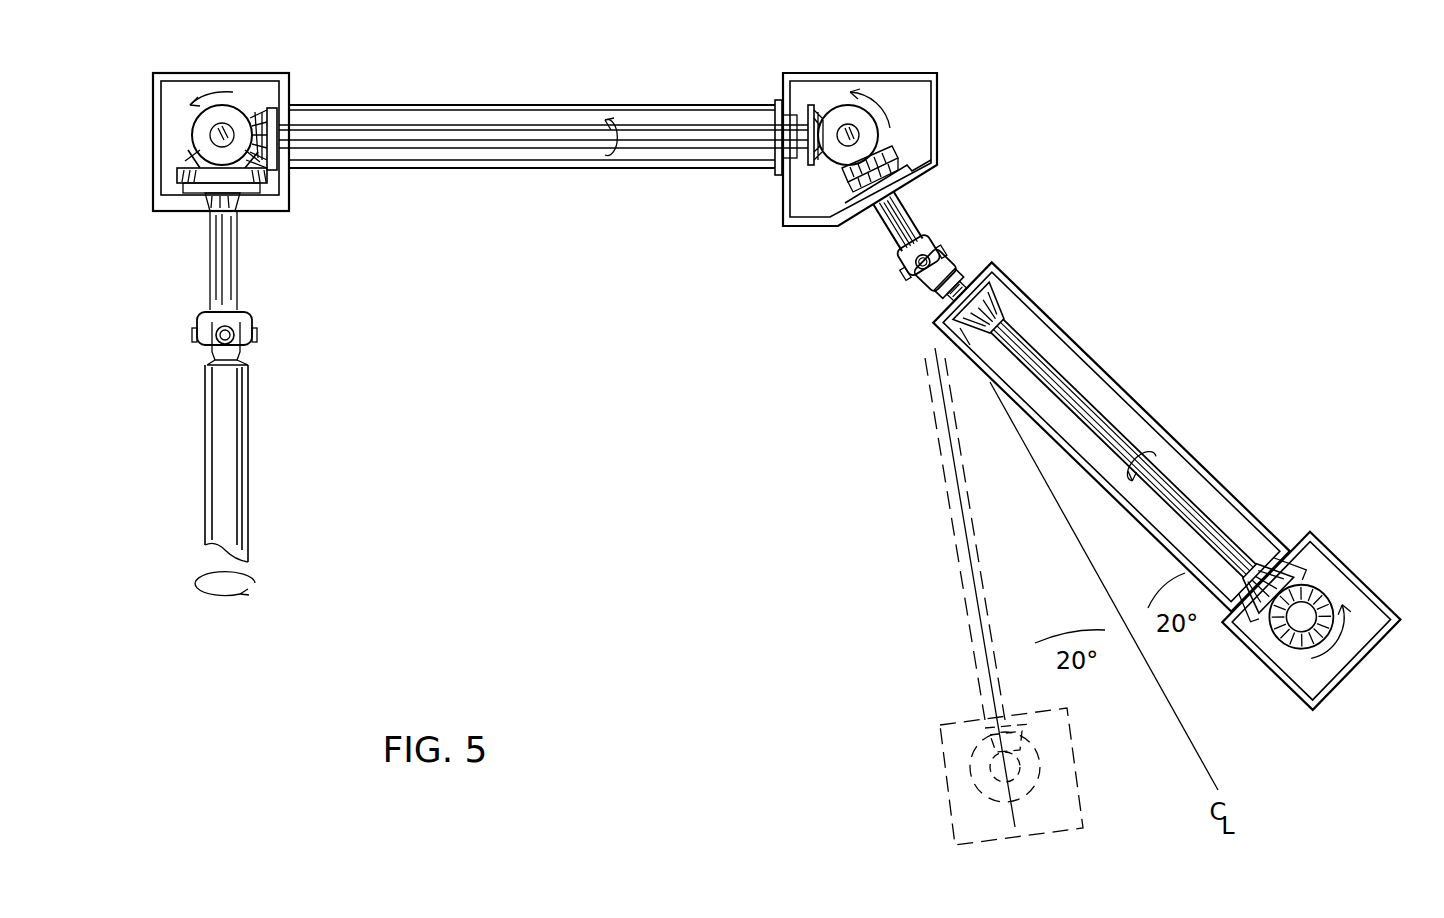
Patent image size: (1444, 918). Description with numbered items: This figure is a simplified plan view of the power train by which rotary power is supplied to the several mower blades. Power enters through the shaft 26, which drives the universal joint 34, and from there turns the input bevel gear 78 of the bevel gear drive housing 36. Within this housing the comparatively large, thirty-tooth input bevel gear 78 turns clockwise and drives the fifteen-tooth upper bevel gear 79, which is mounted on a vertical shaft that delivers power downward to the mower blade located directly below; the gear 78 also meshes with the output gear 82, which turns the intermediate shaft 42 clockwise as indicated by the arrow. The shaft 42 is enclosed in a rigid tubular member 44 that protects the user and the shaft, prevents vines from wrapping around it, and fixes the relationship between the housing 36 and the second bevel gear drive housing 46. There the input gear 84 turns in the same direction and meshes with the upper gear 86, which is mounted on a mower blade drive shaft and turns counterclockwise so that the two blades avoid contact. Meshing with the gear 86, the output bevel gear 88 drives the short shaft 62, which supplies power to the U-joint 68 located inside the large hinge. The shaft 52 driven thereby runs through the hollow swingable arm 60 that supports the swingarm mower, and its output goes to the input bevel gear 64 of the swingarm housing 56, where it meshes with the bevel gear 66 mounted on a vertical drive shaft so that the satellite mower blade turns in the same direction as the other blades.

The shaft 26 is at (227, 427).
The universal joint 34 is at (243, 325).
The bevel gear drive housing 36 is at (167, 118).
The intermediate shaft 42 is at (670, 135).
The rigid tubular member 44 is at (562, 108).
The bevel gear drive housing 46 is at (930, 113).
The shaft 52 is at (1072, 402).
The swingarm housing 56 is at (1385, 600).
The hollow swingable arm 60 is at (1196, 460).
The short shaft 62 is at (908, 230).
The input bevel gear 64 is at (1297, 572).
The bevel gear 66 is at (1310, 645).
The U-joint 68 is at (930, 273).
The input bevel gear 78 is at (177, 157).
The upper bevel gear 79 is at (233, 118).
The output gear 82 is at (280, 168).
The input gear 84 is at (820, 108).
The upper gear 86 is at (838, 152).
The output bevel gear 88 is at (890, 145).